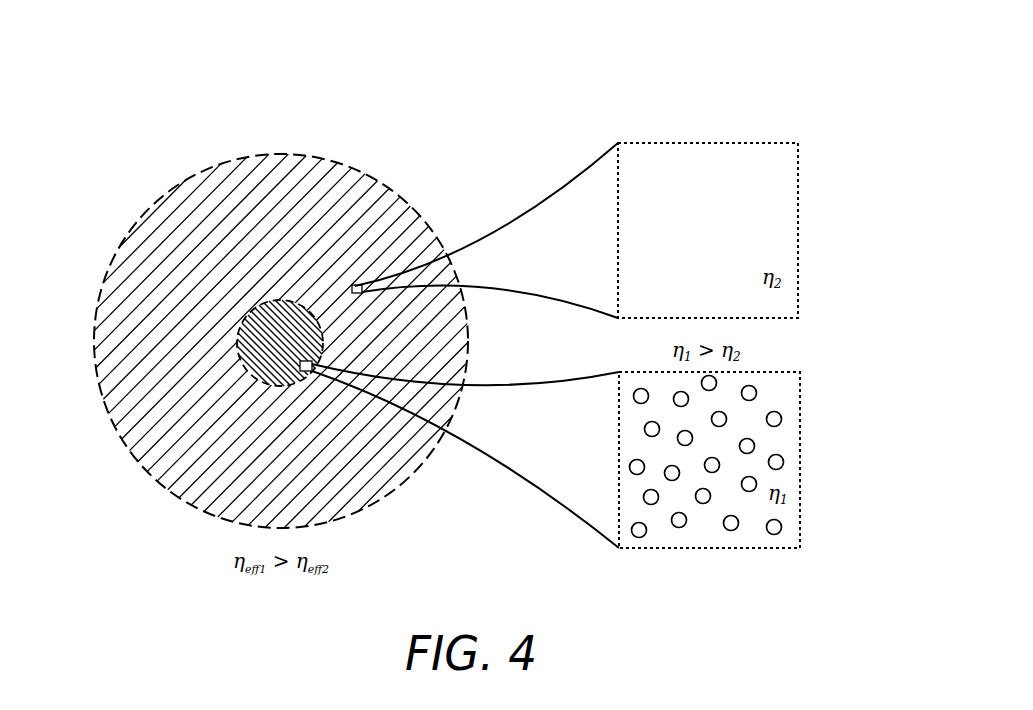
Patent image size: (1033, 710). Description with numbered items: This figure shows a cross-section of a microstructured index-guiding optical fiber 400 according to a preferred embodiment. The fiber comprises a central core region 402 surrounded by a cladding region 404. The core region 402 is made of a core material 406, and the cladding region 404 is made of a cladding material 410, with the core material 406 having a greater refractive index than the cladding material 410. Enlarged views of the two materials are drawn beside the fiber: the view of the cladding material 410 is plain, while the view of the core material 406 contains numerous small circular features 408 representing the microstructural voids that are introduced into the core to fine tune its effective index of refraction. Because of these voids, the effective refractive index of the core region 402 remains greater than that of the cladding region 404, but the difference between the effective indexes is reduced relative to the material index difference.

The microstructured index-guiding optical fiber 400 is at (150, 203).
The core region 402 is at (238, 343).
The cladding region 404 is at (193, 470).
The core material 406 is at (786, 398).
The high-index particle 408 is at (772, 453).
The cladding material 410 is at (775, 148).